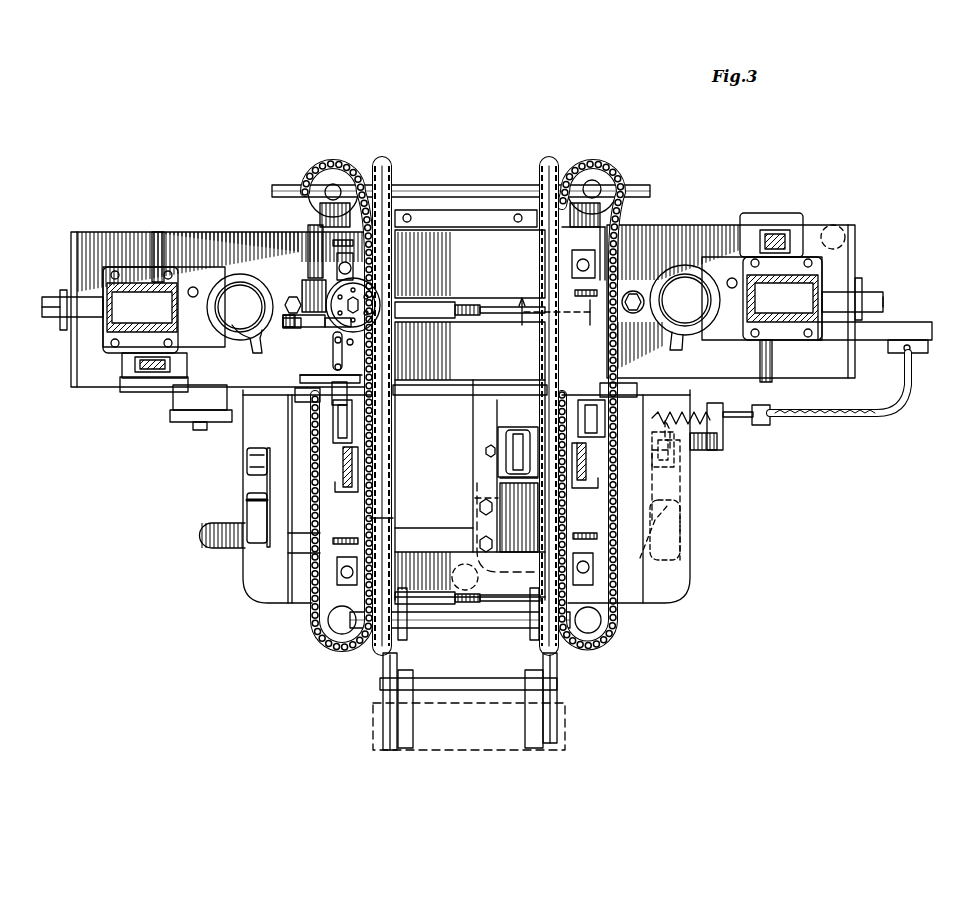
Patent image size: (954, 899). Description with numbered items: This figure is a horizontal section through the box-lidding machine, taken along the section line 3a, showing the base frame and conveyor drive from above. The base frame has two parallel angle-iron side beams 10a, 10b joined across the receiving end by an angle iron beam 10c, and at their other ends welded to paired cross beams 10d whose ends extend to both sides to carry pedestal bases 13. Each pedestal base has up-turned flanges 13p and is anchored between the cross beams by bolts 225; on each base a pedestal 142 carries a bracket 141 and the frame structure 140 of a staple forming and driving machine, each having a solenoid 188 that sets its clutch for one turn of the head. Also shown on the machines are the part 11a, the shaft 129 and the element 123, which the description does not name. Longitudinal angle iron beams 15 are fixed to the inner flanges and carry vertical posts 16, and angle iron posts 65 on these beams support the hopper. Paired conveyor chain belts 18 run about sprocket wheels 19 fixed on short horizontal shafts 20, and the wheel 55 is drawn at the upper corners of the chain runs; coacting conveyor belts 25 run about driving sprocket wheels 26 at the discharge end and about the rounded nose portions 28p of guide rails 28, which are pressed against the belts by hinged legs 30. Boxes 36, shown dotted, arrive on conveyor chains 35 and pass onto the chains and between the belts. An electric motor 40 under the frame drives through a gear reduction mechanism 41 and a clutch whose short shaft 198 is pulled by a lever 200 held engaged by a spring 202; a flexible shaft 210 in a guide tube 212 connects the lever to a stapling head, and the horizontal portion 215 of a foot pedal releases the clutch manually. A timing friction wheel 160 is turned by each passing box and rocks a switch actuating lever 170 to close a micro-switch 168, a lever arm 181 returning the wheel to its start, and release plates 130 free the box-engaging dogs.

The section line 3a is at (555, 326).
The side beam 10a is at (680, 515).
The side beam 10b is at (255, 442).
The angle iron beam 10c is at (498, 590).
The cross beam 10d is at (435, 250).
The bore 11a is at (845, 230).
The pedestal base 13 is at (200, 245).
The flange 13p is at (158, 240).
The angle iron beam 15 is at (290, 540).
The vertical post 16 is at (315, 258).
The conveyor chain belt 18 is at (538, 275).
The sprocket wheel 19 is at (375, 165).
The horizontal shaft 20 is at (522, 186).
The conveyor belt 25 is at (622, 270).
The driving sprocket wheel 26 is at (322, 182).
The guide rail 28 is at (265, 490).
The rounded nose portion 28p is at (322, 652).
The leg 30 is at (312, 212).
The conveyor chain 35 is at (385, 730).
The box 36 is at (448, 705).
The electric motor 40 is at (505, 490).
The gear reduction mechanism 41 is at (508, 428).
The sprocket 55 is at (333, 185).
The angle iron post 65 is at (262, 455).
The rod 123 is at (305, 418).
The shaft 129 is at (72, 305).
The release plate 130 is at (882, 312).
The frame structure 140 is at (105, 330).
The bracket 141 is at (115, 358).
The pedestal 142 is at (238, 278).
The friction wheel 160 is at (440, 240).
The micro-switch 168 is at (295, 330).
The switch actuating lever 170 is at (328, 325).
The lever arm 181 is at (297, 390).
The solenoid 188 is at (140, 378).
The short shaft 198 is at (700, 480).
The lever 200 is at (735, 530).
The spring 202 is at (724, 445).
The flexible shaft 210 is at (745, 418).
The guide tube 212 is at (890, 412).
The horizontal portion 215 is at (215, 546).
The bolt 225 is at (292, 297).